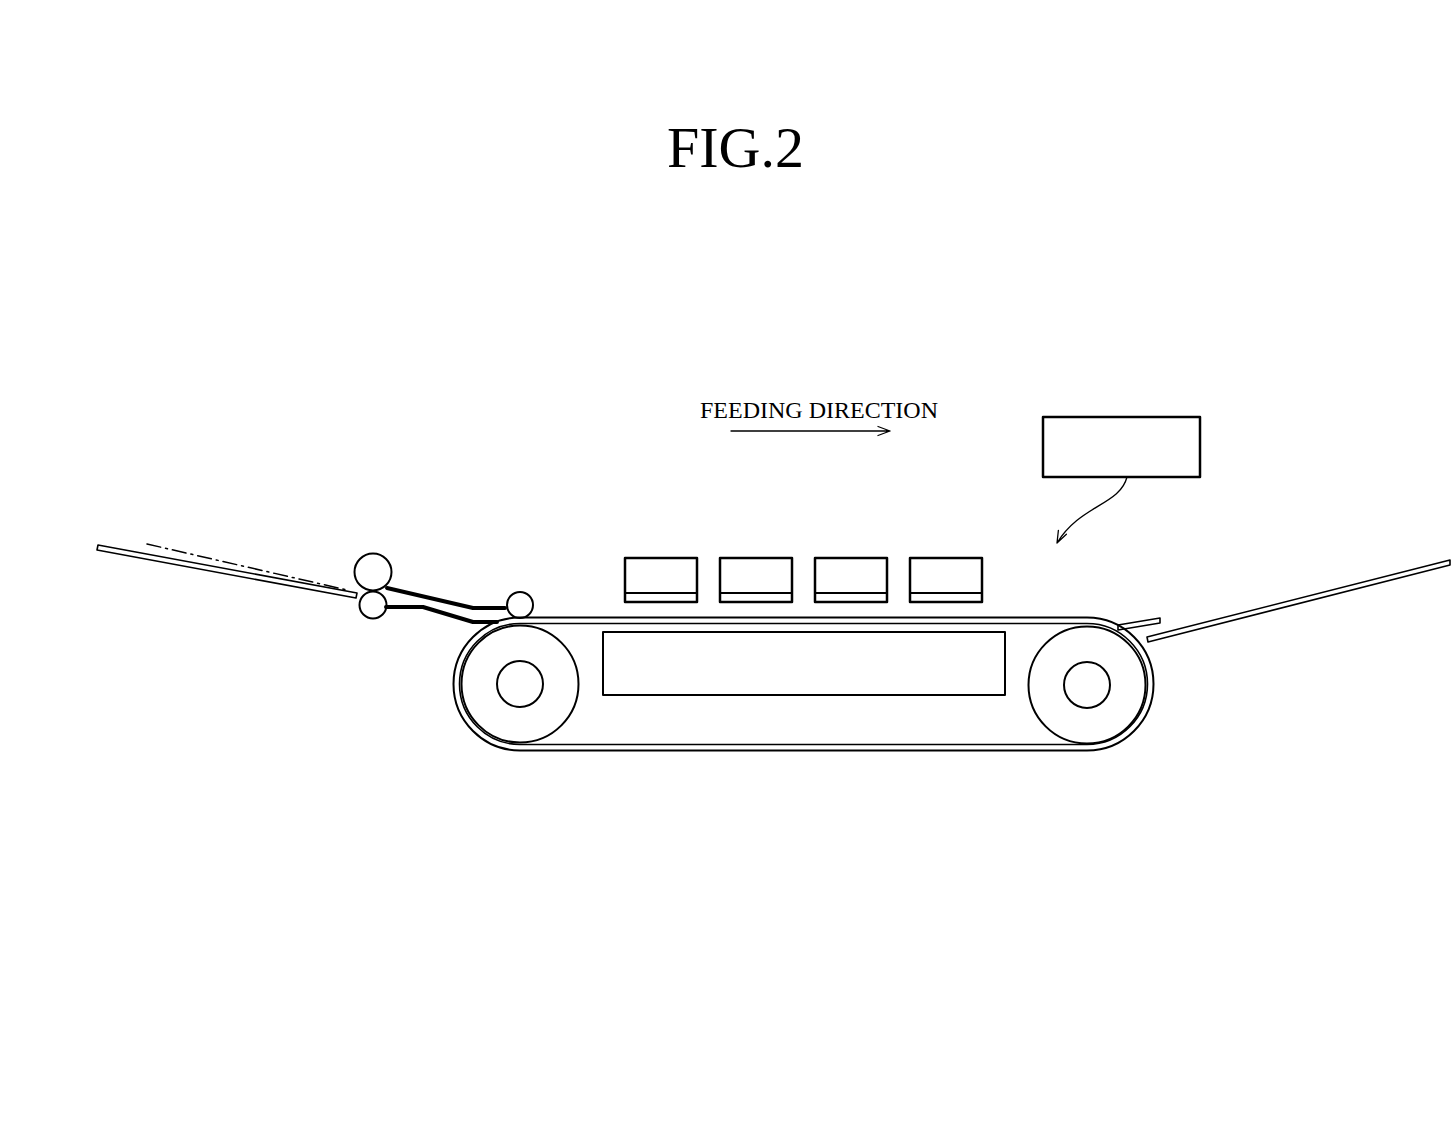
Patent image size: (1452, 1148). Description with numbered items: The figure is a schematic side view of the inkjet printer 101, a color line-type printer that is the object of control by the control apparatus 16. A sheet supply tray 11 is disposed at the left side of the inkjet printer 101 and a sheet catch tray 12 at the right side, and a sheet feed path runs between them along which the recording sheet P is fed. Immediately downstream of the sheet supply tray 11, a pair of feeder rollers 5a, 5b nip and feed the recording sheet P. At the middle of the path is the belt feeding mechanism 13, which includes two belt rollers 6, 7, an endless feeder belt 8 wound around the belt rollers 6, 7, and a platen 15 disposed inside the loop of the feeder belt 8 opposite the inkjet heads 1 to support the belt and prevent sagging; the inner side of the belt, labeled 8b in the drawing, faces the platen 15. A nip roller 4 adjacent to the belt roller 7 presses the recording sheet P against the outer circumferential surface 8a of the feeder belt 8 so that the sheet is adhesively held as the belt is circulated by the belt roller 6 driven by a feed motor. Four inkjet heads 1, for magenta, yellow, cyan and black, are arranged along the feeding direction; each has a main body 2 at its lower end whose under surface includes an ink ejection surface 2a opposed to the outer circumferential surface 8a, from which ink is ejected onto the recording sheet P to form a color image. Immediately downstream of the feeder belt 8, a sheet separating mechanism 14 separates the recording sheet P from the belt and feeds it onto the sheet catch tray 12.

The recording sheet P is at (133, 545).
The inkjet head 1 is at (791, 559).
The main body 2 is at (805, 590).
The ink ejection surface 2a is at (940, 604).
The nip roller 4 is at (520, 603).
The feeder roller 5a is at (372, 570).
The feeder roller 5b is at (370, 606).
The belt roller 6 is at (1117, 720).
The belt roller 7 is at (520, 722).
The feeder belt 8 is at (804, 743).
The outer circumferential surface 8a is at (543, 752).
The inner surface of conveyor belt 8b is at (569, 743).
The sheet supply tray 11 is at (232, 532).
The sheet catch tray 12 is at (1364, 552).
The belt feeding mechanism 13 is at (720, 743).
The sheet separating mechanism 14 is at (1143, 620).
The platen 15 is at (683, 672).
The control apparatus 16 is at (1127, 417).
The inkjet printer 101 is at (1230, 465).